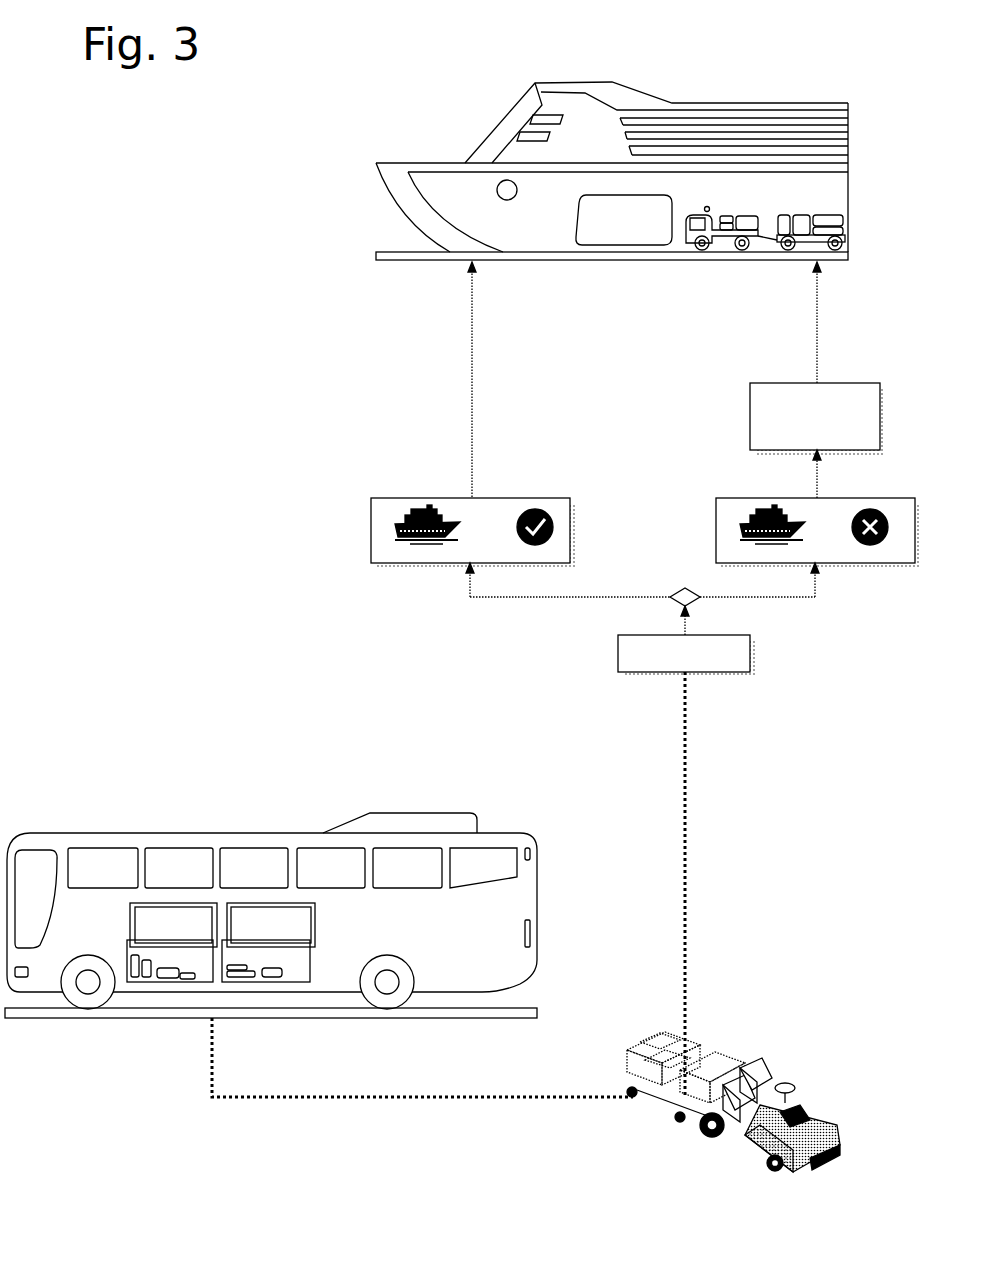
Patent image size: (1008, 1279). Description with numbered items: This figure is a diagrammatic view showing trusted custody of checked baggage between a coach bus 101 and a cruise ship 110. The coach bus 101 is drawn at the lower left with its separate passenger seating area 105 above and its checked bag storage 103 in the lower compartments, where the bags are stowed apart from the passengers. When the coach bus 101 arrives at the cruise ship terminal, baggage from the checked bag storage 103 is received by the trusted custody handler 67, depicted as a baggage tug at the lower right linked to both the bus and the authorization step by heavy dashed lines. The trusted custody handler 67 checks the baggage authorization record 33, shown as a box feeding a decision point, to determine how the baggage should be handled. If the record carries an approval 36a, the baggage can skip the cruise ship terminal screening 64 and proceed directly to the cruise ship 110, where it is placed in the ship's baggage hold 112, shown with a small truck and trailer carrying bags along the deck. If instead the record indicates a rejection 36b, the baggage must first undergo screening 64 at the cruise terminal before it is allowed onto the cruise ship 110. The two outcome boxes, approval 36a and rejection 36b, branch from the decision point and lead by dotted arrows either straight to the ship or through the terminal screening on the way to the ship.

The cruise ship 110 is at (672, 103).
The baggage hold of cruise ship 112 is at (626, 230).
The approval 36a is at (371, 533).
The rejection 36b is at (857, 498).
The cruise ship terminal screening 64 is at (842, 383).
The baggage authorization record 33 is at (752, 652).
The coach bus 101 is at (183, 833).
The passenger seating area 105 is at (349, 874).
The checked bag storage 103 is at (303, 969).
The trusted custody handler 67 is at (780, 1087).